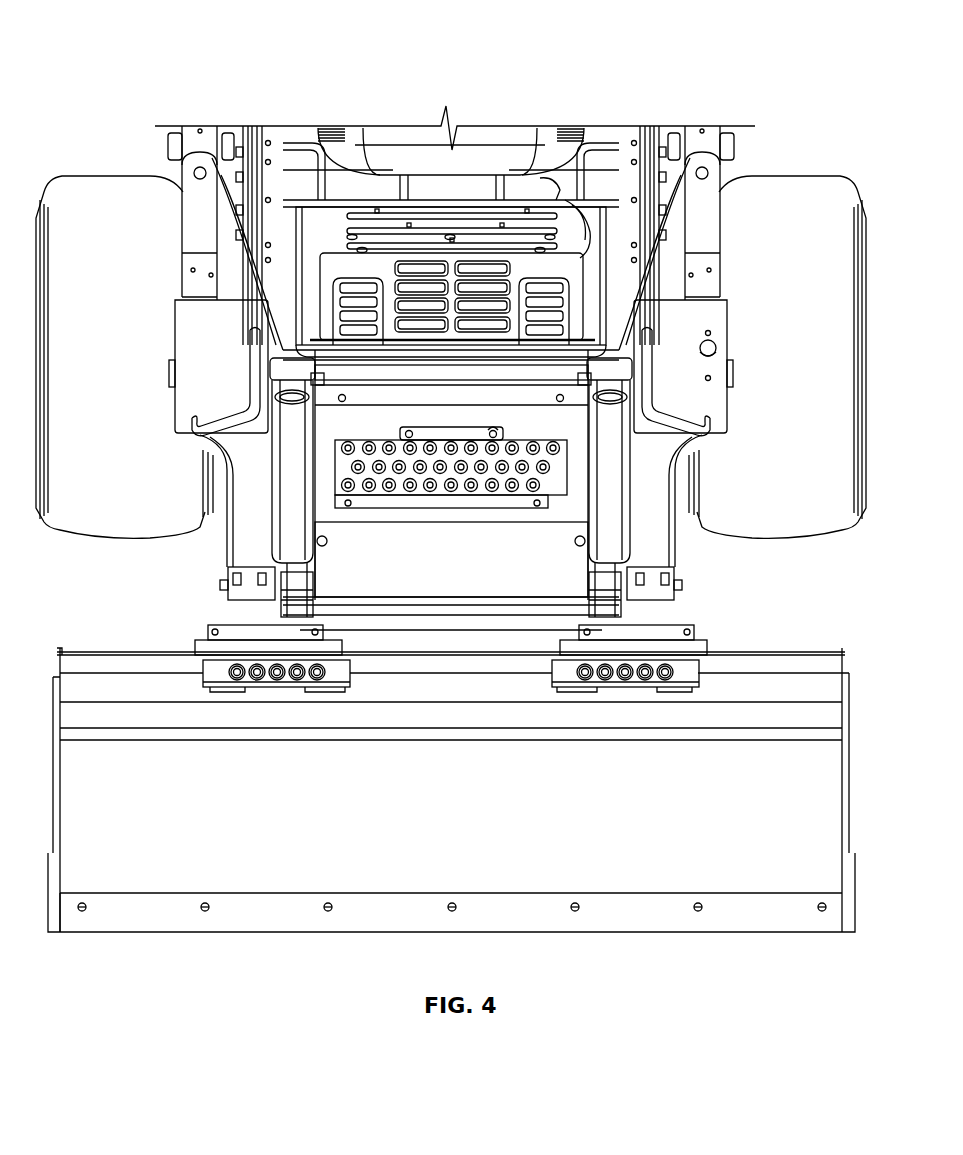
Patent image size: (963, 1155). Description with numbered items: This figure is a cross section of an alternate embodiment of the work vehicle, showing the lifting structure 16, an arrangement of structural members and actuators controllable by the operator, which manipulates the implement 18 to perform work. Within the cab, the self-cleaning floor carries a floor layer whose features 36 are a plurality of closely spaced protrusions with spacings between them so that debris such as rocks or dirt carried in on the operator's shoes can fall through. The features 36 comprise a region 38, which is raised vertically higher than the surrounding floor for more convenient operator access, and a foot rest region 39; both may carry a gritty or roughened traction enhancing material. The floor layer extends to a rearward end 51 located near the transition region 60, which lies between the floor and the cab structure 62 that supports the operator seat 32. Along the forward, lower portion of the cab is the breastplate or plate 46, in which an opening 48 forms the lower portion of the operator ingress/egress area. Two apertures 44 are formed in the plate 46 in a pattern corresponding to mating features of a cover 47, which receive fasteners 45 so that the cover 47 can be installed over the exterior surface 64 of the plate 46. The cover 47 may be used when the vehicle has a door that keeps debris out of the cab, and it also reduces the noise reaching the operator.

The lifting structure 16 is at (575, 562).
The implement 18 is at (852, 785).
The operator seat 32 is at (438, 162).
The features 36 is at (488, 268).
The region 38 is at (520, 270).
The foot rest region 39 is at (545, 270).
The apertures 44 is at (502, 430).
The fasteners 45 is at (493, 428).
The plate 46 is at (456, 358).
The cover 47 is at (415, 428).
The opening 48 is at (413, 350).
The rearward end 51 is at (568, 205).
The transition region 60 is at (563, 207).
The cab structure 62 is at (553, 183).
The exterior surface 64 is at (570, 420).